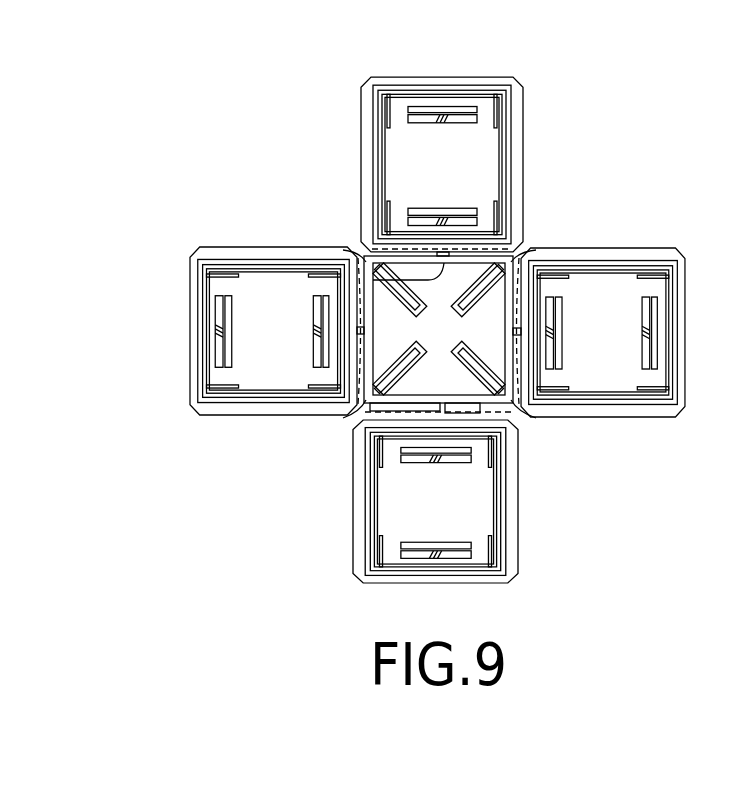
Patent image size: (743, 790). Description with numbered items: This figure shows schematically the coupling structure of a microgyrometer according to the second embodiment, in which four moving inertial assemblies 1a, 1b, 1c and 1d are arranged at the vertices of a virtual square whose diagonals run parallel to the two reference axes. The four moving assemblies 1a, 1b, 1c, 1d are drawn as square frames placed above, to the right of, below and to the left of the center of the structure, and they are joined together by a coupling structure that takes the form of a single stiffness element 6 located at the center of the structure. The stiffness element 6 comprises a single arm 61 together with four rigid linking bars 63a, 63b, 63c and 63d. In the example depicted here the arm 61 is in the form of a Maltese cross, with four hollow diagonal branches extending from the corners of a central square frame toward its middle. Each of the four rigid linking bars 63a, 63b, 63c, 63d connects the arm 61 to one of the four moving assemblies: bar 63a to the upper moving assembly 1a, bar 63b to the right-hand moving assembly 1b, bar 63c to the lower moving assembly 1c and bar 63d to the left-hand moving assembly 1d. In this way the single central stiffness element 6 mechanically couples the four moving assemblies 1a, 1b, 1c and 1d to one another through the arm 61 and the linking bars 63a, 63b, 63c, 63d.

The moving assembly 1a is at (437, 72).
The moving assembly 1b is at (620, 235).
The moving assembly 1c is at (533, 502).
The moving assembly 1d is at (182, 330).
The stiffness element 6 is at (513, 256).
The arm 61 is at (505, 418).
The rigid linking bar 63a is at (380, 270).
The rigid linking bar 63b is at (513, 345).
The rigid linking bar 63c is at (383, 408).
The rigid linking bar 63d is at (366, 398).